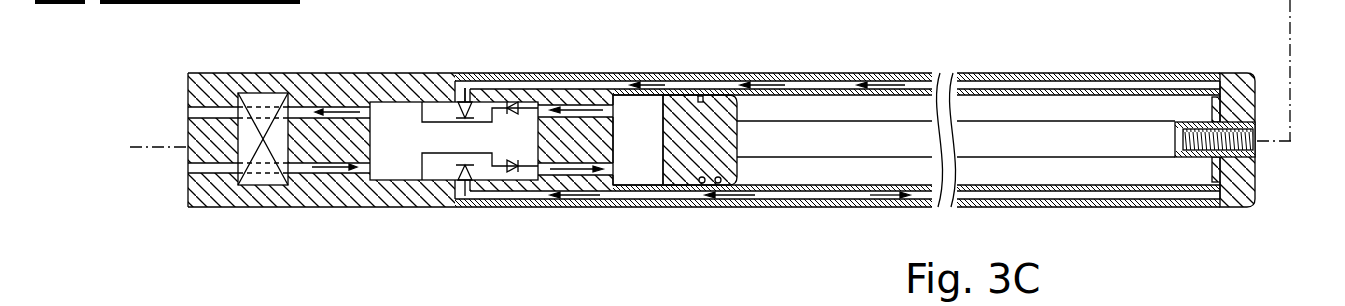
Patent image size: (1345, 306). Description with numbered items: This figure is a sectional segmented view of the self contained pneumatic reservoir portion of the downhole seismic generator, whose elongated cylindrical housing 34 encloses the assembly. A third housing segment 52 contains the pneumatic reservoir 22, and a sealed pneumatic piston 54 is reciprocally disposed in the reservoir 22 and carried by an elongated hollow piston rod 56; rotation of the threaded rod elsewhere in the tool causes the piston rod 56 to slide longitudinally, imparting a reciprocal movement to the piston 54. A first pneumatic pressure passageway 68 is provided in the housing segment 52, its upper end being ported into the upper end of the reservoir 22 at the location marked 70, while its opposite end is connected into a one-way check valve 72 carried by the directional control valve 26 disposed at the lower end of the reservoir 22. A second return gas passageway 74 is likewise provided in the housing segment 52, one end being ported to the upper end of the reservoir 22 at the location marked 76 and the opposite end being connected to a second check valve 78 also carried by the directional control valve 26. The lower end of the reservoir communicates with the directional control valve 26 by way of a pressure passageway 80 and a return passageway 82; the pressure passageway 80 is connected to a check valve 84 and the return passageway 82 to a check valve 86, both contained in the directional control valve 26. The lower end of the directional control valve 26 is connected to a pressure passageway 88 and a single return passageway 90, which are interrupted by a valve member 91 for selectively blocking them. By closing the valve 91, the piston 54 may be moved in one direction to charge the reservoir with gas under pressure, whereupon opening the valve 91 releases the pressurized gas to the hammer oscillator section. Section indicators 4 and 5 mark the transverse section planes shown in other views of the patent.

The pneumatic reservoir 22 is at (807, 193).
The directional control valve 26 is at (397, 180).
The elongated cylindrical housing 34 is at (1040, 73).
The third housing segment 52 is at (653, 207).
The sealed pneumatic piston 54 is at (733, 197).
The elongated hollow piston rod 56 is at (967, 160).
The first pneumatic pressure passageway 68 is at (830, 83).
The port of pressure passageway 70 is at (1227, 73).
The check valve 72 is at (457, 108).
The second return gas passageway 74 is at (957, 208).
The port of return passageway 76 is at (1257, 187).
The second check valve 78 is at (458, 163).
The pressure passageway 80 is at (590, 102).
The return passageway 82 is at (572, 174).
The check valve 84 is at (512, 106).
The check valve 86 is at (505, 168).
The pressure passageway 88 is at (190, 113).
The single return passageway 90 is at (190, 172).
The valve member 91 is at (260, 93).
The section line 4- 4 is at (1218, 68).
The section line 5- 5 is at (573, 63).